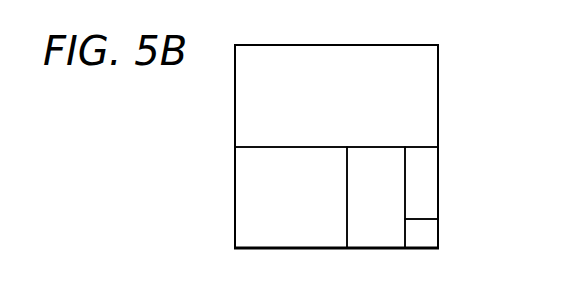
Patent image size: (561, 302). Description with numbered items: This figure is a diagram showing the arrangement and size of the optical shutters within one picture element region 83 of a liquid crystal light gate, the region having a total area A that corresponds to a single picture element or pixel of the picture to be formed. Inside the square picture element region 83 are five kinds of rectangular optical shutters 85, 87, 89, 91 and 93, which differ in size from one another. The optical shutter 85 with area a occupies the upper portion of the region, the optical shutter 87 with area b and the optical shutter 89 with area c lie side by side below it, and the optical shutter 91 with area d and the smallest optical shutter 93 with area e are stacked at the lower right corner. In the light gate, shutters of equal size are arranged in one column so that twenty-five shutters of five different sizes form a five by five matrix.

The picture element region 83 is at (424, 46).
The optical shutter 85 is at (428, 84).
The optical shutter 87 is at (275, 235).
The optical shutter 89 is at (365, 235).
The optical shutter 91 is at (428, 164).
The optical shutter 93 is at (430, 228).